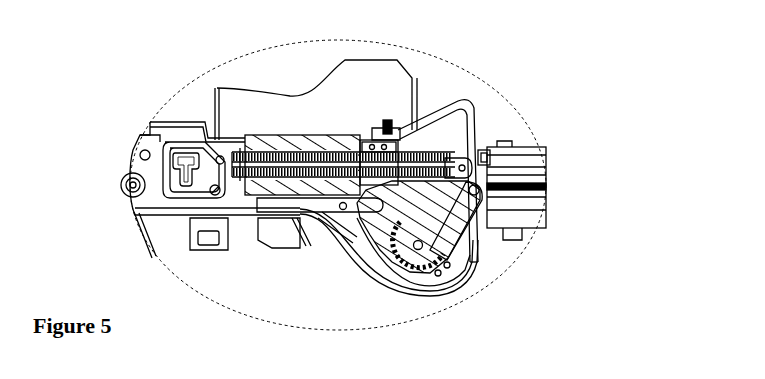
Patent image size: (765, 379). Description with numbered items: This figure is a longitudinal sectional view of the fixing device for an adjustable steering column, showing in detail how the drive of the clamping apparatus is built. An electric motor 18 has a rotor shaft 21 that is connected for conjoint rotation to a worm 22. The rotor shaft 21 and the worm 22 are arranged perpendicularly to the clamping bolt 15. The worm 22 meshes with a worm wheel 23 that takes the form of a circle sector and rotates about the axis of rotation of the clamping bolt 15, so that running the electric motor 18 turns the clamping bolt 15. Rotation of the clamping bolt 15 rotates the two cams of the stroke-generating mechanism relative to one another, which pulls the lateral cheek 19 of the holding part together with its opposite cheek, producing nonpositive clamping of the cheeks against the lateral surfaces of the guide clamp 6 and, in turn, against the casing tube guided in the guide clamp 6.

The electric motor 18 is at (275, 130).
The rotor shaft 21 is at (367, 128).
The worm 22 is at (417, 210).
The clamping bolt 15 is at (441, 203).
The worm wheel 23 is at (480, 233).
The lateral cheek 19 is at (372, 268).
The guide clamp 6 is at (486, 190).